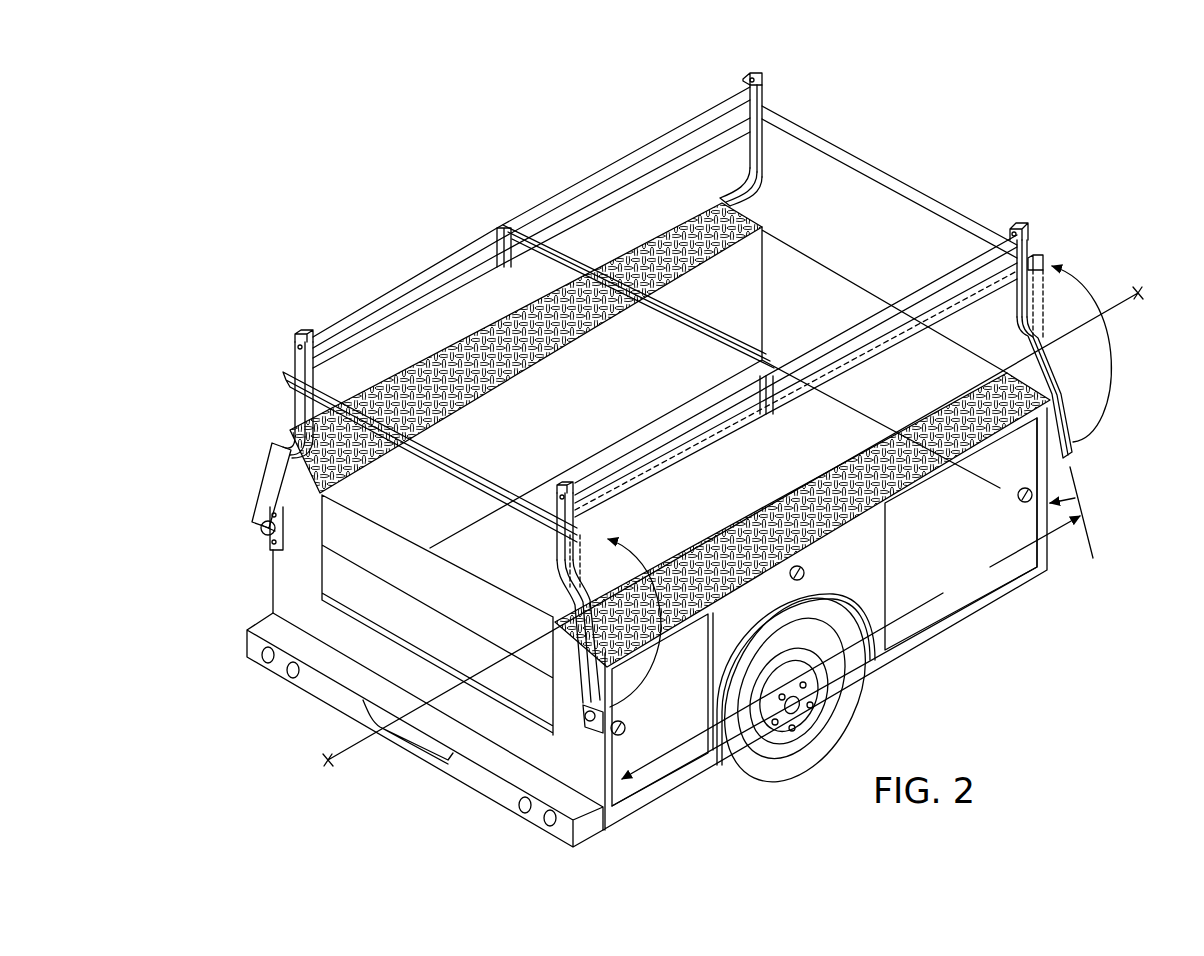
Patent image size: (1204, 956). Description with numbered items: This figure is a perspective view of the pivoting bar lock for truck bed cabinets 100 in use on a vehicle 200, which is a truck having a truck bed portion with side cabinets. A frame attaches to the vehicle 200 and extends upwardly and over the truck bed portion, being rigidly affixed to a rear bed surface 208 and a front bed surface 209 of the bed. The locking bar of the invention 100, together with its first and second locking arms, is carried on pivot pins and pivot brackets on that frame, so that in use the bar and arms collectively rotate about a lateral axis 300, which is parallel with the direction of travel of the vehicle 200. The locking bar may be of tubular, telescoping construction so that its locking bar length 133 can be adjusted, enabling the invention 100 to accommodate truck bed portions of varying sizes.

The pivoting bar lock for truck bed cabinets 100 is at (211, 315).
The vehicle 200 is at (328, 703).
The rear bed surface 208 is at (557, 762).
The front bed surface 209 is at (1075, 497).
The locking bar length 133 is at (851, 647).
The lateral axis 300 is at (375, 745).